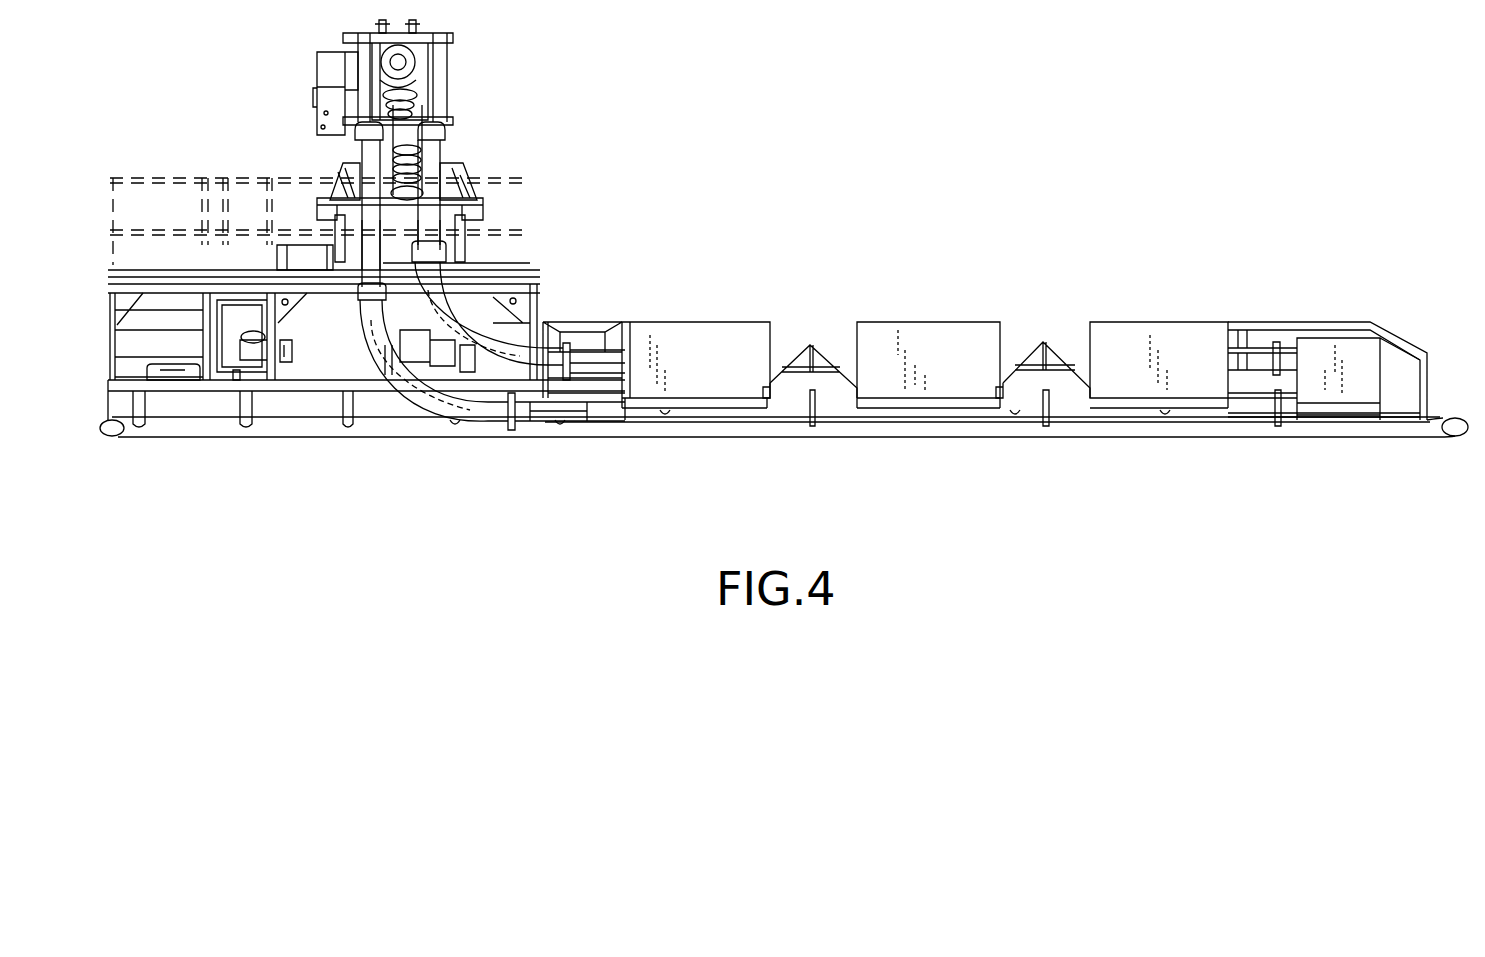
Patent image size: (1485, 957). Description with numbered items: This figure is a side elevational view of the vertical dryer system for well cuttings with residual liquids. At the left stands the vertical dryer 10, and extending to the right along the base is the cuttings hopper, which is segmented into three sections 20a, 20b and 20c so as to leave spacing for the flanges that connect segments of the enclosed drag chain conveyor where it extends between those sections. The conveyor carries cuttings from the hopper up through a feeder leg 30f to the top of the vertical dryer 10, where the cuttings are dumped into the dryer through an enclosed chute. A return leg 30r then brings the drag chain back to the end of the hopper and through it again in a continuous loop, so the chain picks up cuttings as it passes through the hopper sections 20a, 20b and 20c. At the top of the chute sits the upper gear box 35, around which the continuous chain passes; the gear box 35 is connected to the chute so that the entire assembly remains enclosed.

The vertical dryer 10 is at (462, 156).
The upper gear box 35 is at (433, 43).
The feeder leg 30f is at (412, 400).
The return leg 30r is at (465, 335).
The hopper section 20a is at (695, 333).
The hopper section 20b is at (945, 330).
The hopper section 20c is at (1165, 328).